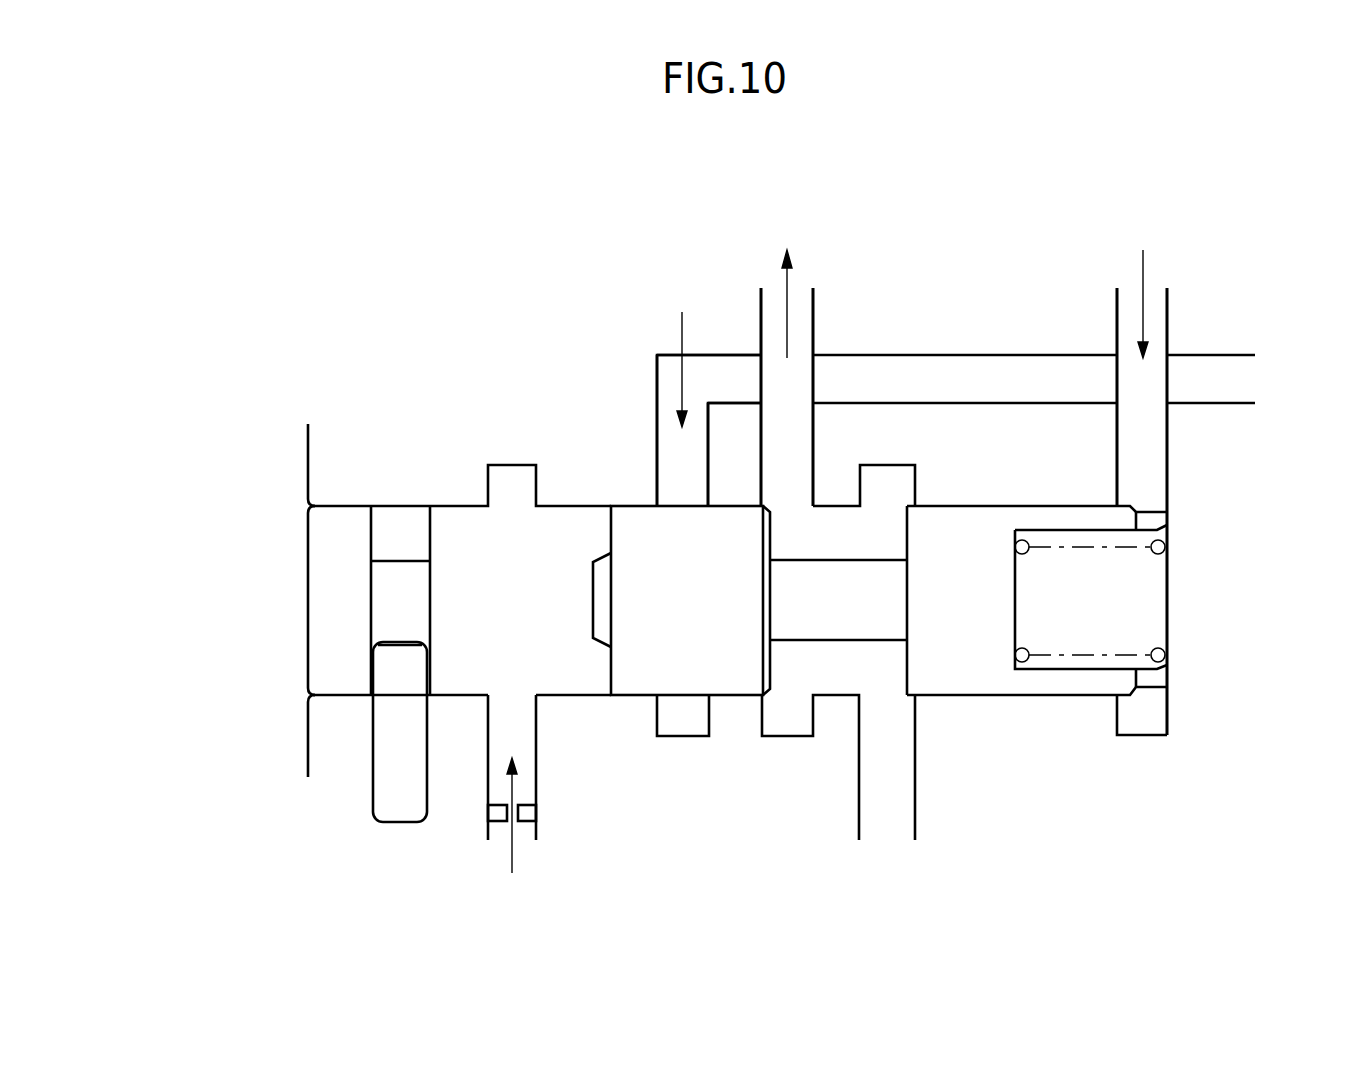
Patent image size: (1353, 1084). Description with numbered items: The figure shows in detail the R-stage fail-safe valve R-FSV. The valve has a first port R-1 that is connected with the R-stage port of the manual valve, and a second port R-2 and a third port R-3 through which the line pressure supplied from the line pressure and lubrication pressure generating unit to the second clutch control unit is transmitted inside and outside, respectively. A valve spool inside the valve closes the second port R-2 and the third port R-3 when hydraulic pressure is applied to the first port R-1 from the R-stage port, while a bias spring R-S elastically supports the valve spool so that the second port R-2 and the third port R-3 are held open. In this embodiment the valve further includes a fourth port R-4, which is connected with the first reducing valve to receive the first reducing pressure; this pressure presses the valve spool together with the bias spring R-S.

The R-stage fail-safe valve R-FSV is at (298, 598).
The first port R-1 is at (518, 730).
The second port R-2 is at (683, 470).
The third port R-3 is at (790, 442).
The fourth port R-4 is at (1142, 457).
The bias spring R-S is at (1090, 655).